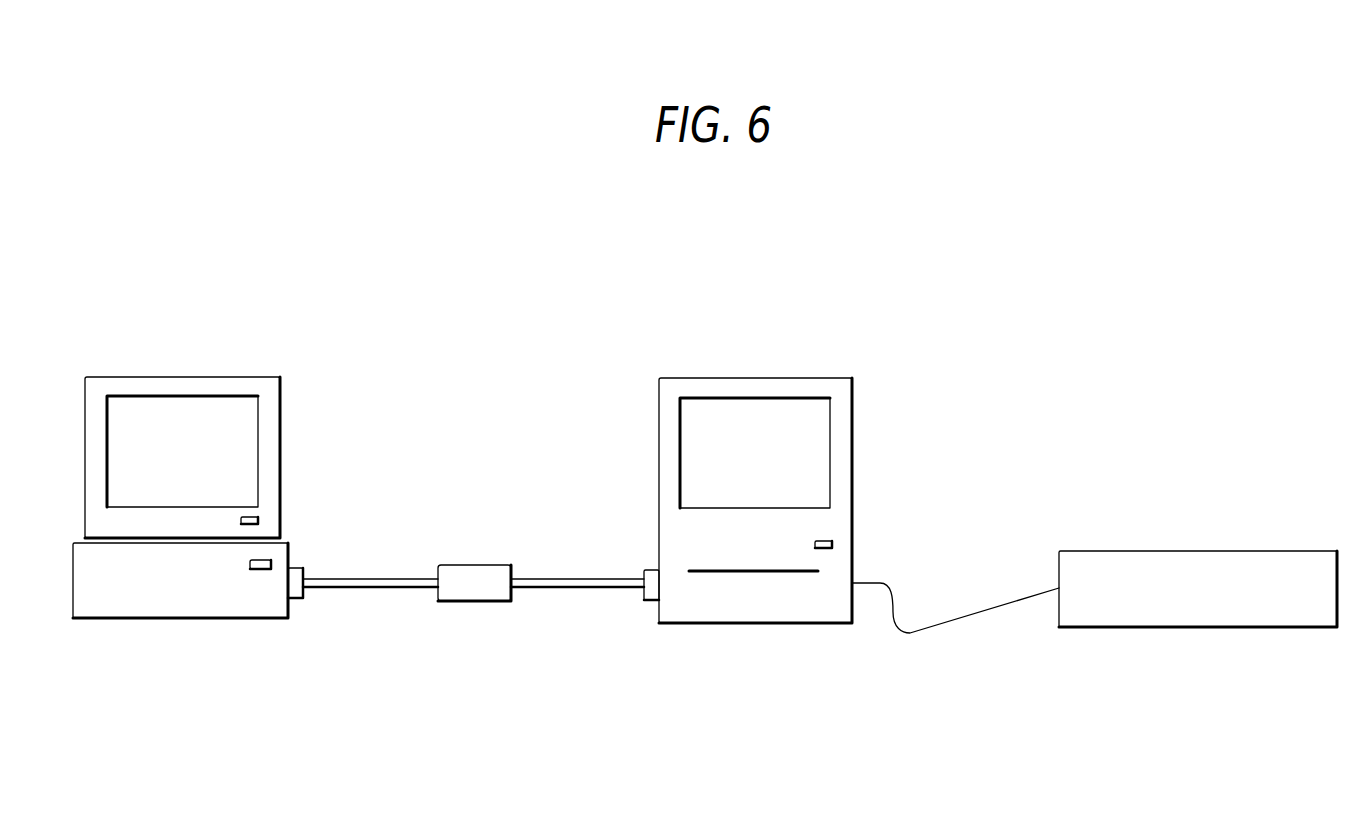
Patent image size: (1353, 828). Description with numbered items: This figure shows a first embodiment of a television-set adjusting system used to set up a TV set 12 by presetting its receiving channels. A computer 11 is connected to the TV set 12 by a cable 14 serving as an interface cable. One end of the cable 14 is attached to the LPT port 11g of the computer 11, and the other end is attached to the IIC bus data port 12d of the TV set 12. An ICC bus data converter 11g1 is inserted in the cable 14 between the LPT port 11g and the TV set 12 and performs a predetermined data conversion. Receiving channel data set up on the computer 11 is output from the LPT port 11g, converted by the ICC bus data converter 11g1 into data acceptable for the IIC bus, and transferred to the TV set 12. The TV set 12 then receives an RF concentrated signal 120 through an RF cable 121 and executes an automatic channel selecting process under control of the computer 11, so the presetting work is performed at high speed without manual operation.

The computer 11 is at (190, 346).
The LPT port 11g is at (294, 568).
The ICC bus data converter 11g1 is at (475, 565).
The cable 14 is at (372, 578).
The TV set 12 is at (764, 347).
The IIC bus data port 12d is at (652, 604).
The RF cable 121 is at (923, 592).
The RF concentrated signal 120 is at (1198, 551).